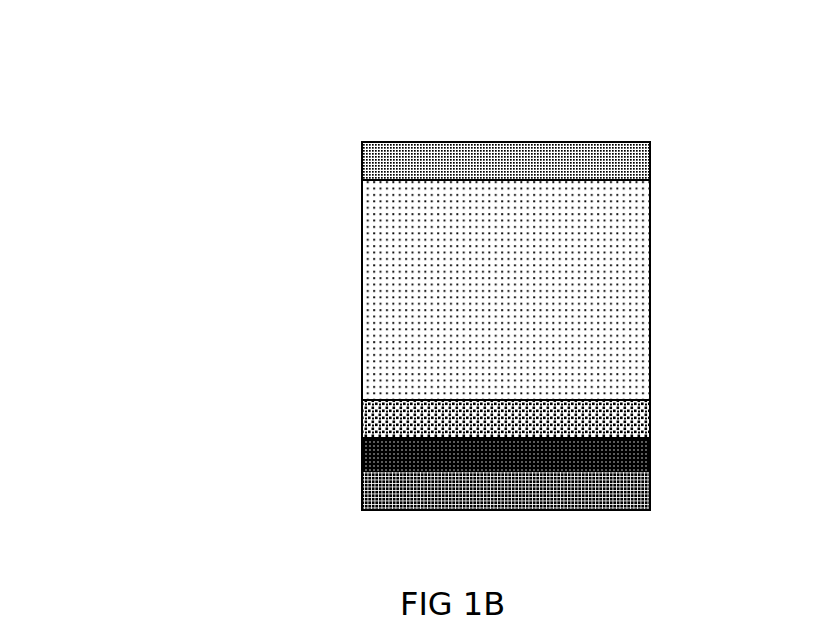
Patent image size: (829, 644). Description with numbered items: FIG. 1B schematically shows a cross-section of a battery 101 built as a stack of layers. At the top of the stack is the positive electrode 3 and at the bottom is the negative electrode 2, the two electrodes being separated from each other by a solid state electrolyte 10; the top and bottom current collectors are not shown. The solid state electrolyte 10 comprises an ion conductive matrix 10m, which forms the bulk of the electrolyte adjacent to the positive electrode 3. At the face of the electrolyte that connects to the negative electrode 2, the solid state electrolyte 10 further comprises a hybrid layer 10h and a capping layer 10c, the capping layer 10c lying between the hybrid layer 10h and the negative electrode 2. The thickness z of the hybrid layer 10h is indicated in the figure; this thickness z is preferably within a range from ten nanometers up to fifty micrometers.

The battery 101 is at (341, 286).
The negative electrode 2 is at (429, 499).
The solid state electrolyte 10 is at (434, 326).
The capping layer 10c is at (468, 455).
The hybrid layer 10h is at (429, 415).
The ion conductive matrix 10m is at (429, 236).
The positive electrode 3 is at (429, 161).
The thickness of the hybrid layer z is at (663, 400).